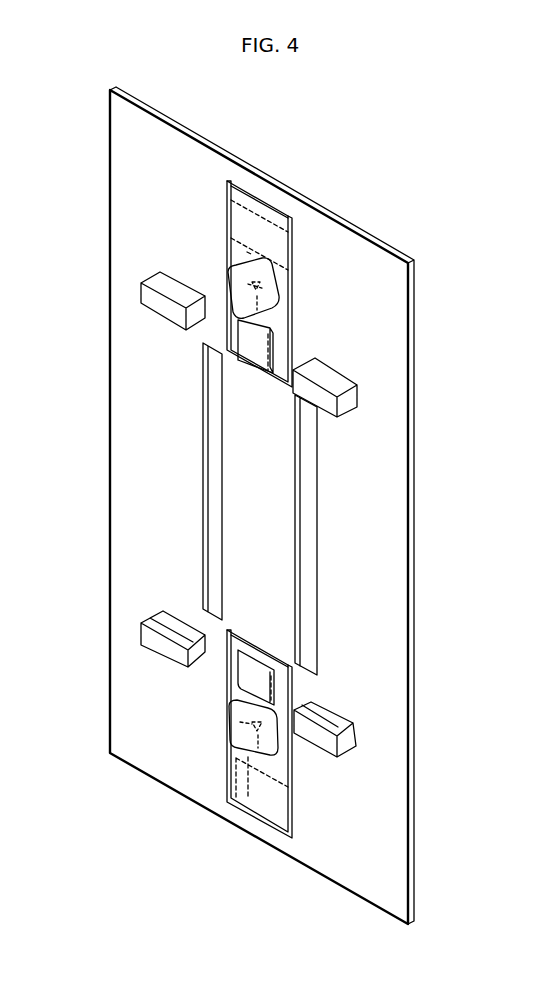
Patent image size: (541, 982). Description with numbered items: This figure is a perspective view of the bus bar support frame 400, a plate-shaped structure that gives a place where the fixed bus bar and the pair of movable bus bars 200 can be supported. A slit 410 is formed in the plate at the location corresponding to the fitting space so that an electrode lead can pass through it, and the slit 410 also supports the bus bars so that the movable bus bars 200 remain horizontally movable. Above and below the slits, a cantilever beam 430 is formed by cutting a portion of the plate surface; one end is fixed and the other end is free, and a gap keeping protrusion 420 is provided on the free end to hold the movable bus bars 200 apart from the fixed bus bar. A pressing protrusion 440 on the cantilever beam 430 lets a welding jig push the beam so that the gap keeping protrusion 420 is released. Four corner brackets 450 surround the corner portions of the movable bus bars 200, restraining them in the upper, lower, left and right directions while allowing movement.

The movable bus bar 200 is at (165, 537).
The bus bar support frame 400 is at (430, 499).
The slit 410 is at (215, 482).
The gap keeping protrusion 420 is at (253, 347).
The cantilever beam 430 is at (246, 240).
The pressing protrusion 440 is at (245, 293).
The corner bracket 450 is at (155, 300).